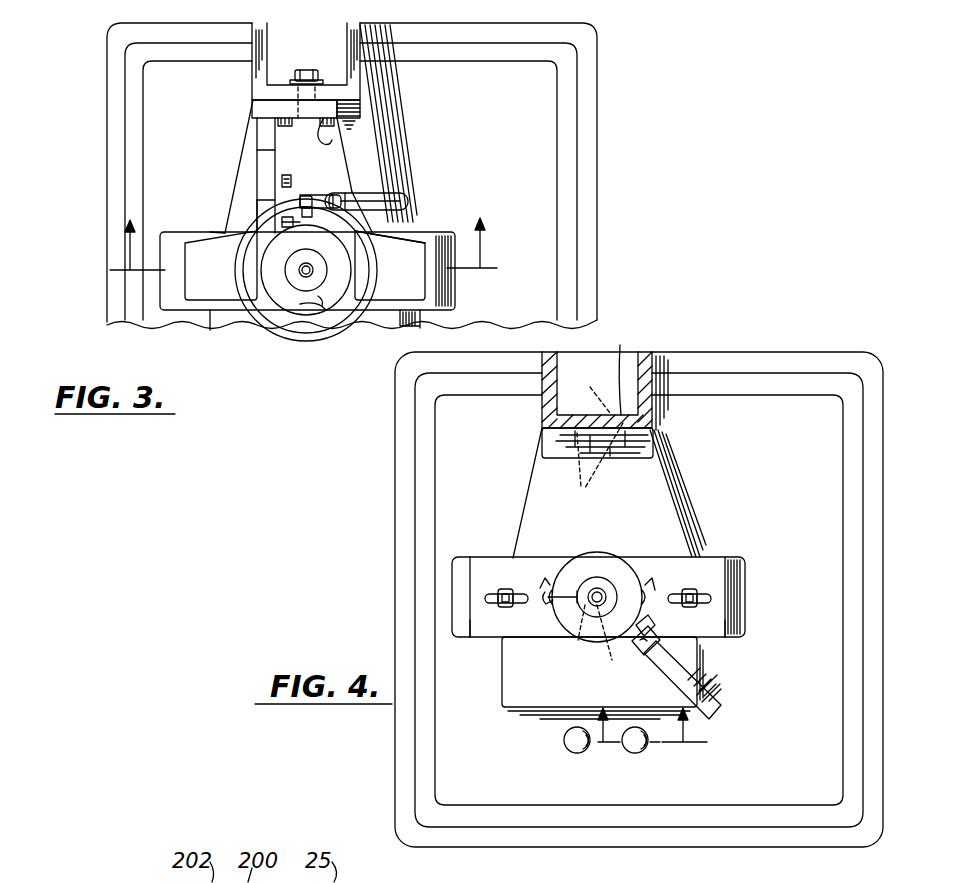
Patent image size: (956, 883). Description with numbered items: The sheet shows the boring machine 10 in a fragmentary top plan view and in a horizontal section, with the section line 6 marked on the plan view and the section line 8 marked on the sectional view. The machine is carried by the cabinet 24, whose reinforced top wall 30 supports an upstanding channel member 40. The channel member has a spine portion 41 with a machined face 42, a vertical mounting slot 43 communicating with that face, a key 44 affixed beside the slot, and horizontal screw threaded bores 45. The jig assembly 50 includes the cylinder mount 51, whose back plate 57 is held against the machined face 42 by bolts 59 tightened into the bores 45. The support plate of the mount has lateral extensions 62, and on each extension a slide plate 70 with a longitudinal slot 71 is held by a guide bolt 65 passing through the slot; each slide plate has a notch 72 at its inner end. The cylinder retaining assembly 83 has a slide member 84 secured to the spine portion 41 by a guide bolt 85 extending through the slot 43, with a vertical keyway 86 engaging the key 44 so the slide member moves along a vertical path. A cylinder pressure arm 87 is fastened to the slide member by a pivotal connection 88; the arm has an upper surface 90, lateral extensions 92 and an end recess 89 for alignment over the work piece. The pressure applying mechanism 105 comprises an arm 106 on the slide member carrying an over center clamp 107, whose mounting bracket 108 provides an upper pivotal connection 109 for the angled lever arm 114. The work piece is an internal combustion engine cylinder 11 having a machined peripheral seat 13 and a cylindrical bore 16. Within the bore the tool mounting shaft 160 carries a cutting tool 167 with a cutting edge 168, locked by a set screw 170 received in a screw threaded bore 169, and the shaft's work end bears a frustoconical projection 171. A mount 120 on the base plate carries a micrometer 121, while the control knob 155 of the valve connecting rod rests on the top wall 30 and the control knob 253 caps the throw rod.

In FIG. 3, the section line 6- 6 is at (302, 244).
In FIG. 4, the section line 8- 8 is at (652, 739).
In FIG. 3, the boring machine 10 is at (606, 81).
In FIG. 4, the boring machine 10 is at (800, 340).
In FIG. 3, the internal combustion engine cylinder 11 is at (300, 362).
In FIG. 3, the circumscribing machined peripheral seat 13 is at (287, 318).
In FIG. 3, the cylindrical bore 16 is at (312, 308).
In FIG. 3, the cabinet 24 is at (606, 193).
In FIG. 4, the cabinet 24 is at (707, 342).
In FIG. 3, the top wall 30 is at (500, 167).
In FIG. 4, the top wall 30 is at (788, 718).
In FIG. 3, the channel member 40 is at (362, 72).
In FIG. 4, the channel member 40 is at (647, 353).
In FIG. 3, the spine portion 41 is at (337, 93).
In FIG. 4, the spine portion 41 is at (619, 369).
In FIG. 3, the machined face 42 is at (282, 116).
In FIG. 3, the vertical mounting slot 43 is at (312, 87).
In FIG. 3, the key 44 is at (365, 112).
In FIG. 4, the key 44 is at (621, 415).
In FIG. 4, the screw threaded bores 45 is at (588, 390).
In FIG. 4, the jig assembly 50 is at (751, 545).
In FIG. 4, the cylinder mount 51 is at (745, 569).
In FIG. 4, the back plate 57 is at (562, 459).
In FIG. 4, the bolts 59 is at (590, 468).
In FIG. 4, the lateral extensions 62 is at (458, 578).
In FIG. 4, the guide bolt 65 is at (507, 589).
In FIG. 4, the slide plate 70 is at (477, 629).
In FIG. 4, the longitudinal slot 71 is at (500, 605).
In FIG. 4, the notch 72 is at (628, 553).
In FIG. 3, the cylinder retaining assembly 83 is at (422, 226).
In FIG. 3, the slide member 84 is at (280, 124).
In FIG. 3, the guide bolt 85 is at (316, 70).
In FIG. 3, the vertical keyway 86 is at (318, 112).
In FIG. 3, the cylinder pressure arm 87 is at (250, 226).
In FIG. 3, the pivotal connection 88 is at (287, 133).
In FIG. 3, the recess 89 is at (317, 278).
In FIG. 3, the upper surface 90 is at (222, 256).
In FIG. 3, the lateral extensions 92 is at (217, 288).
In FIG. 3, the pressure applying mechanism 105 is at (380, 182).
In FIG. 3, the arm 106 is at (262, 157).
In FIG. 3, the over center clamp 107 is at (412, 185).
In FIG. 3, the mounting bracket 108 is at (285, 205).
In FIG. 3, the upper pivotal connection 109 is at (333, 222).
In FIG. 3, the angled lever arm 114 is at (342, 253).
In FIG. 4, the mount 120 is at (641, 630).
In FIG. 4, the micrometer 121 is at (712, 704).
In FIG. 4, the control knob 155 is at (565, 747).
In FIG. 3, the tool mounting shaft 160 is at (288, 288).
In FIG. 4, the tool mounting shaft 160 is at (587, 611).
In FIG. 4, the cutting tool 167 is at (575, 594).
In FIG. 4, the cutting edge 168 is at (545, 596).
In FIG. 4, the screw threaded bore 169 is at (609, 650).
In FIG. 4, the set screw 170 is at (590, 615).
In FIG. 3, the frustoconical projection 171 is at (321, 299).
In FIG. 4, the frustoconical projection 171 is at (601, 588).
In FIG. 4, the control knob 253 is at (634, 755).